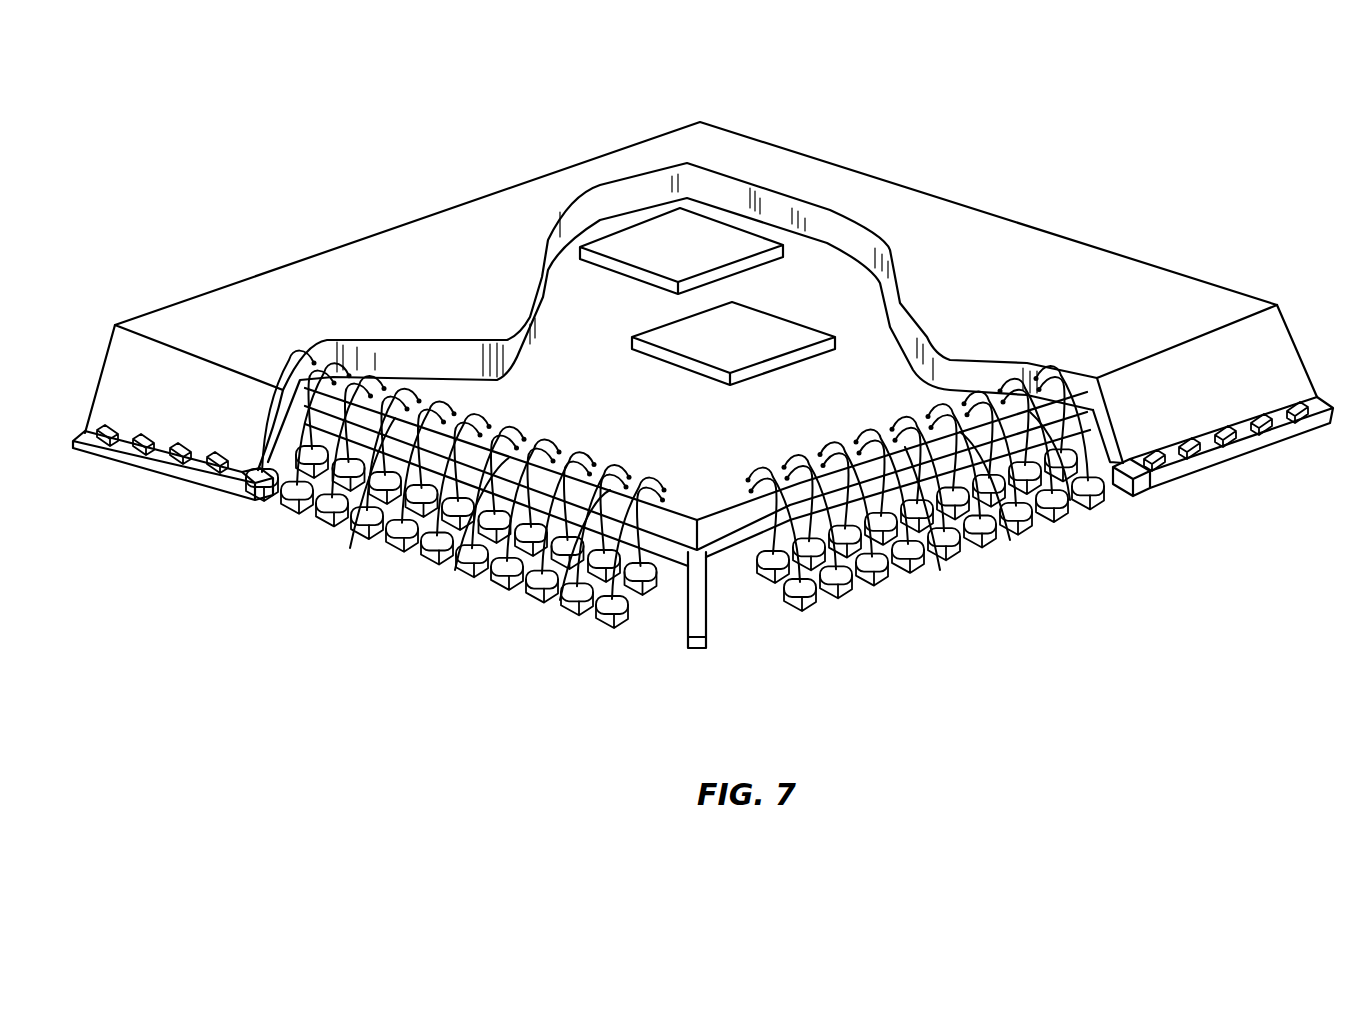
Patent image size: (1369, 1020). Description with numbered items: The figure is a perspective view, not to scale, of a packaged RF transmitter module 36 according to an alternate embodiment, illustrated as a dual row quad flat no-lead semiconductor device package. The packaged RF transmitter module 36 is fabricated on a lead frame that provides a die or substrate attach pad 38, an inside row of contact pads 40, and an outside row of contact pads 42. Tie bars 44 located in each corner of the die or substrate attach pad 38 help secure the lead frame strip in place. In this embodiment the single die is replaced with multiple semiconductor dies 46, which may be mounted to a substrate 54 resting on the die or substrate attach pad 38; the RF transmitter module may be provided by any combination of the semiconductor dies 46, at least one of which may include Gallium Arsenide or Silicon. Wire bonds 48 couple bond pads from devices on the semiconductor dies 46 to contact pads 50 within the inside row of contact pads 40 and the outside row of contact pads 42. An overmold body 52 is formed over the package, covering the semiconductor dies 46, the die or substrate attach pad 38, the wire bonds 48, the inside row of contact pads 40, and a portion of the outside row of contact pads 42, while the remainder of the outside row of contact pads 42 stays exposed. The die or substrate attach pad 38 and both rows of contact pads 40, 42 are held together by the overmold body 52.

The packaged RF transmitter module 36 is at (362, 138).
The die or substrate attach pad 38 is at (722, 552).
The inside row of contact pads 40 is at (645, 600).
The outside row of contact pads 42 is at (617, 632).
The tie bars 44 is at (700, 623).
The semiconductor dies 46 is at (694, 251).
The wire bonds 48 is at (565, 450).
The contact pads 50 is at (558, 598).
The overmold body 52 is at (457, 311).
The substrate 54 is at (703, 425).